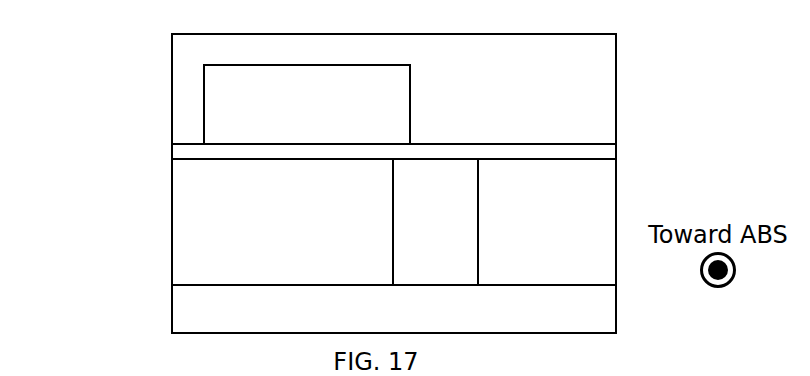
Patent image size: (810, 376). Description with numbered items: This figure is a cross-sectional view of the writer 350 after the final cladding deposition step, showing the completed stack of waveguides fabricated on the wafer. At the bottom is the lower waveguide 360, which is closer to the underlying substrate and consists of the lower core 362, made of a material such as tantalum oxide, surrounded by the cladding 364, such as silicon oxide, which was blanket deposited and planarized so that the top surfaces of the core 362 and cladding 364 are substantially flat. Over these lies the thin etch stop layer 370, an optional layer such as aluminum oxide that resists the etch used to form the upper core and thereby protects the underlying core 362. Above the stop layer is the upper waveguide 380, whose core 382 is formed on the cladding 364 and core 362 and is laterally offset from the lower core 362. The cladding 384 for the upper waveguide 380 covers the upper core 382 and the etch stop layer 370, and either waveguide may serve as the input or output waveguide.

The writer 350 is at (80, 30).
The upper waveguide 380 is at (145, 97).
The upper core 382 is at (307, 104).
The cladding layer 384 is at (505, 81).
The etch stop layer 370 is at (172, 151).
The lower waveguide 360 is at (135, 208).
The lower core 362 is at (435, 222).
The cladding layer 364 is at (394, 222).